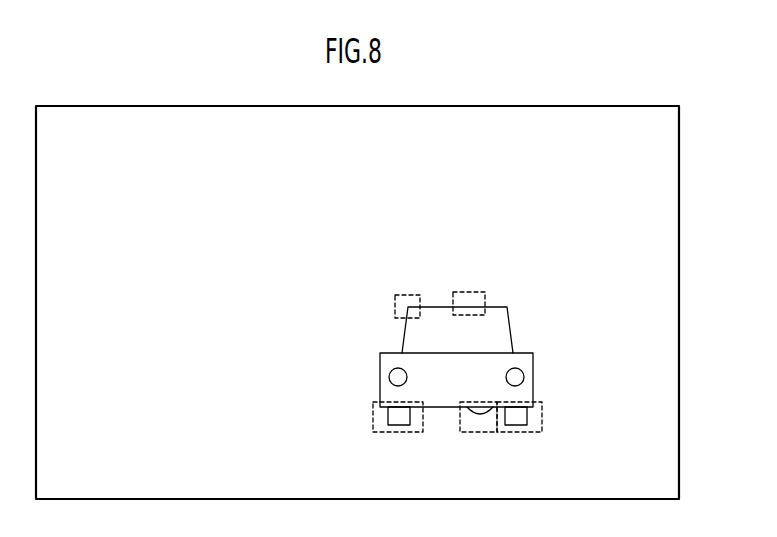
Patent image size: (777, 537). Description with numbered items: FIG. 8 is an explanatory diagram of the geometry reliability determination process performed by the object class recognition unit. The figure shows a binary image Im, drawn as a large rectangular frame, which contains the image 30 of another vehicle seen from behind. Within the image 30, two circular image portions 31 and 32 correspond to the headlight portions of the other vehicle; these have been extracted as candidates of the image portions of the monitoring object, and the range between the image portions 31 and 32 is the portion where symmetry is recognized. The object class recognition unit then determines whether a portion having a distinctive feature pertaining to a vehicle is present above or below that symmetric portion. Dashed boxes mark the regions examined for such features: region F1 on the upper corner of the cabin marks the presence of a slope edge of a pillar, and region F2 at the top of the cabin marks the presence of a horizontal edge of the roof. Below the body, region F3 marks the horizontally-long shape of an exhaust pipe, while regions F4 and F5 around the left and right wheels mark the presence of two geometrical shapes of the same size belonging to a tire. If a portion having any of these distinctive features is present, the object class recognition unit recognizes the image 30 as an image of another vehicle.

The binary image Im is at (681, 272).
The image of another vehicle 30 is at (508, 320).
The image portion of headlight 31 is at (389, 376).
The image portion of headlight 32 is at (524, 377).
The slope edge of pillar F1 is at (408, 297).
The horizontal edge of roof F2 is at (470, 293).
The horizontally-long shape of exhaust pipe F3 is at (485, 433).
The geometrical shape of tire F4 is at (402, 433).
The geometrical shape of tire F5 is at (543, 420).